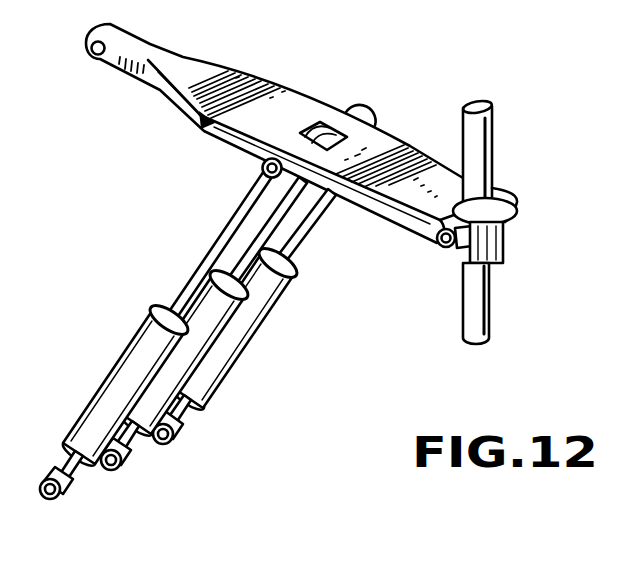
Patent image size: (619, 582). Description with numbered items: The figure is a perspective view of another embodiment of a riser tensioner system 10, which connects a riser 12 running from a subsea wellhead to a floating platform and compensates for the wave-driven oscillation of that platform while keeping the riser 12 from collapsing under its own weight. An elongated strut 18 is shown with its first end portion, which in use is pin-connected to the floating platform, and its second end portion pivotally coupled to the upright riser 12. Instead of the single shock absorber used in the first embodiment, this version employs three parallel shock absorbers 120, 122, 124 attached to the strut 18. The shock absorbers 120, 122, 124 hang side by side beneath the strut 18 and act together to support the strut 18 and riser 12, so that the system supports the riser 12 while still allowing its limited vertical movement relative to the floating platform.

The riser tensioner system 10 is at (322, 283).
The riser 12 is at (493, 120).
The strut 18 is at (292, 97).
The shock absorber 120 is at (90, 467).
The shock absorber 122 is at (153, 440).
The shock absorber 124 is at (222, 372).